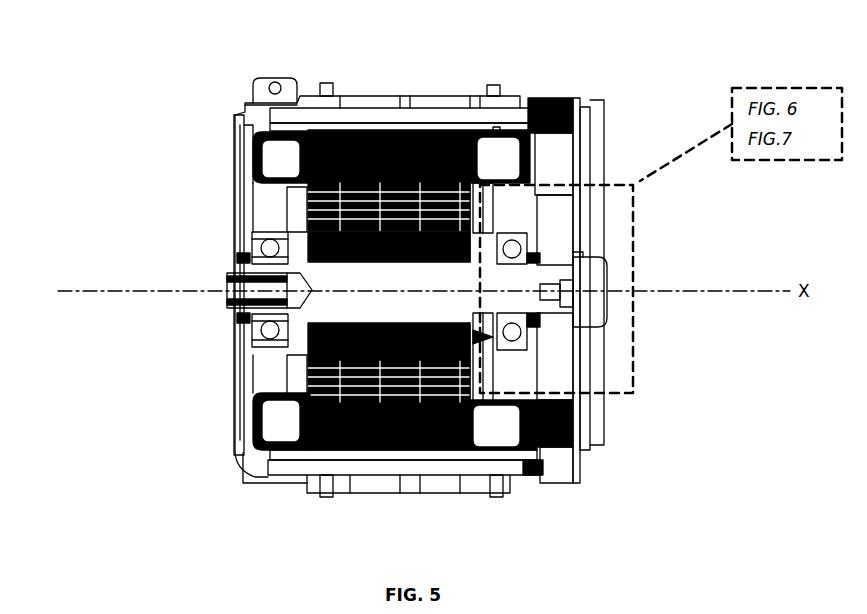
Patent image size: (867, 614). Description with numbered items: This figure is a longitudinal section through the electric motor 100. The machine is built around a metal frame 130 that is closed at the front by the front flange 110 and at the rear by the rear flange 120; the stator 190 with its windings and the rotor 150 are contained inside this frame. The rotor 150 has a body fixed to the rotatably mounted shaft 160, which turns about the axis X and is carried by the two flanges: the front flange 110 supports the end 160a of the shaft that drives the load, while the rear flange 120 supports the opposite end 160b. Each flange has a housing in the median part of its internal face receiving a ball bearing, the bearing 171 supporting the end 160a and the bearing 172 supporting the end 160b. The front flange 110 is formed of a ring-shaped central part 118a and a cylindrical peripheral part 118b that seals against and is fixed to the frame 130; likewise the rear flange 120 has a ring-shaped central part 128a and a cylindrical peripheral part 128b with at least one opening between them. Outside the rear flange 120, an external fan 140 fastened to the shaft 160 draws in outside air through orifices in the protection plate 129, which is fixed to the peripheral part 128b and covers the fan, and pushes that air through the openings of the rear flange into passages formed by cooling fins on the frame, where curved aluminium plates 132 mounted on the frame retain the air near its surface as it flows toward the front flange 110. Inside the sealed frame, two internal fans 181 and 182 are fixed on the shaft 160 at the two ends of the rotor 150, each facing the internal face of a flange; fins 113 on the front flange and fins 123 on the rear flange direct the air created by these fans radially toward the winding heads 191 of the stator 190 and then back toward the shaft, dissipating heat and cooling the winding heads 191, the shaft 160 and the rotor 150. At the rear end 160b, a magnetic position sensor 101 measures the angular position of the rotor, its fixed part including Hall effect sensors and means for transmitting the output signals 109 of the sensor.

The electric motor 100 is at (131, 68).
The magnetic position sensor 101 is at (603, 290).
The output signals of the sensor 109 is at (601, 219).
The front flange 110 is at (239, 437).
The fins 113 is at (264, 207).
The central part 118a is at (240, 170).
The peripheral part 118b is at (248, 135).
The rear flange 120 is at (585, 117).
The fins 123 is at (540, 380).
The central part 128a is at (530, 413).
The peripheral part 128b is at (541, 95).
The protection plate 129 is at (478, 384).
The frame 130 is at (493, 127).
The metal plates 132 is at (370, 92).
The external fan 140 is at (563, 158).
The rotor 150 is at (234, 276).
The rotatably mounted shaft 160 is at (318, 308).
The end of the shaft driving the load 160a is at (250, 321).
The end of the shaft opposite the load 160b is at (540, 305).
The bearing 171 is at (327, 247).
The bearing 172 is at (520, 344).
The internal fan 181 is at (297, 380).
The internal fan 182 is at (520, 388).
The stator 190 is at (392, 140).
The winding heads 191 is at (284, 145).